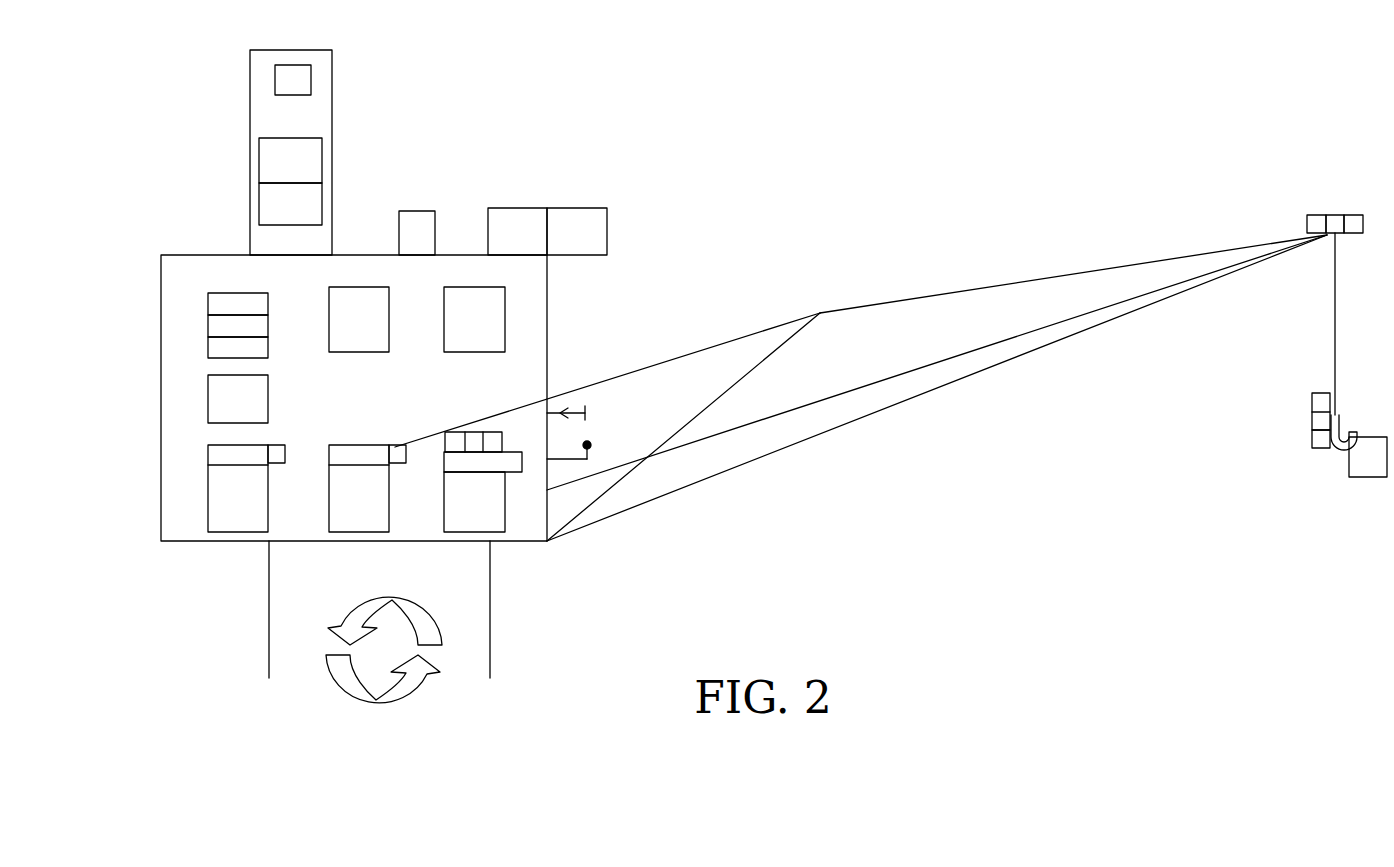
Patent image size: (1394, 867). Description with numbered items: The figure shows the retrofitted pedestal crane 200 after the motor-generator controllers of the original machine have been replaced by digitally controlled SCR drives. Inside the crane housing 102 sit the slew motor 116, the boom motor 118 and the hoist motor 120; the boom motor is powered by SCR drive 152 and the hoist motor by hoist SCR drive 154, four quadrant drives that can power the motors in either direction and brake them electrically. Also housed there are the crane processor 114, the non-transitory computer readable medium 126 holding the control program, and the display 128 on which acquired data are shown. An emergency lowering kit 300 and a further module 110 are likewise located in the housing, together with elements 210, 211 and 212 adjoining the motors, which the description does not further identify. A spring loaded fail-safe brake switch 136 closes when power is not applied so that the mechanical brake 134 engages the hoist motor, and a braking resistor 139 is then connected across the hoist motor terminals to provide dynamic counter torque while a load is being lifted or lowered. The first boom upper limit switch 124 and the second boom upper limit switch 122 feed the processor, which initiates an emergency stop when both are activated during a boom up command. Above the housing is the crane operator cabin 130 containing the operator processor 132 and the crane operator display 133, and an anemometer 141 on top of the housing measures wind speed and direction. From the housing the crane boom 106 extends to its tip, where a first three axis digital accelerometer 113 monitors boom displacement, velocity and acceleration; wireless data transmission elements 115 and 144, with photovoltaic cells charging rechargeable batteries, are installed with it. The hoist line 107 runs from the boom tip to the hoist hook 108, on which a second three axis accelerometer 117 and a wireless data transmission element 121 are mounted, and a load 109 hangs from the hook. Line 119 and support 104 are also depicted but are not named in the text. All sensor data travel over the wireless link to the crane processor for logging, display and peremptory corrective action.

The system 200 is at (653, 163).
The crane housing 102 is at (212, 268).
The crane operator cabin 130 is at (302, 123).
The anemometer 141 is at (292, 82).
The wireless data transmission element 144 is at (593, 223).
The operator processor 132 is at (270, 152).
The crane operator display 133 is at (268, 195).
The controller 110 is at (355, 295).
The emergency lowering kit 300 is at (460, 295).
The crane processor 114 is at (208, 298).
The non-transitory computer readable medium 126 is at (208, 325).
The display 128 is at (208, 350).
The slew motor 116 is at (230, 458).
The first valve 210 is at (282, 452).
The boom motor 118 is at (382, 518).
The SCR drive 152 is at (352, 458).
The second valve 211 is at (393, 452).
The hoist motor 120 is at (488, 518).
The hoist SCR drive 154 is at (463, 460).
The third valve 212 is at (513, 460).
The spring loaded fail-safe brake switch 136 is at (475, 450).
The mechanical brake 134 is at (488, 434).
The braking resistor 139 is at (545, 367).
The second boom upper limit switch 122 is at (573, 408).
The first boom upper limit switch 124 is at (590, 460).
The hoist line 107 is at (814, 402).
The crane boom 106 is at (952, 382).
The wireless data transmission element 115 is at (1318, 223).
The first three axis digital accelerometer 113 is at (1336, 223).
The tubing 119 is at (1321, 402).
The second three axis accelerometer 117 is at (1322, 418).
The wireless data transmission element 121 is at (1320, 437).
The hoist hook 108 is at (1332, 447).
The load 109 is at (1362, 470).
The stand 104 is at (490, 648).